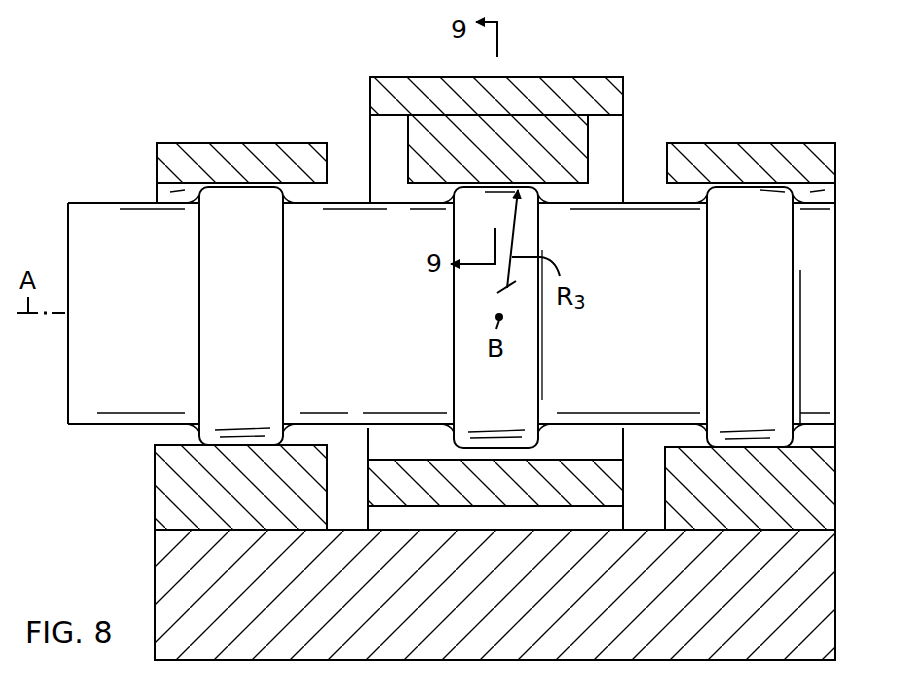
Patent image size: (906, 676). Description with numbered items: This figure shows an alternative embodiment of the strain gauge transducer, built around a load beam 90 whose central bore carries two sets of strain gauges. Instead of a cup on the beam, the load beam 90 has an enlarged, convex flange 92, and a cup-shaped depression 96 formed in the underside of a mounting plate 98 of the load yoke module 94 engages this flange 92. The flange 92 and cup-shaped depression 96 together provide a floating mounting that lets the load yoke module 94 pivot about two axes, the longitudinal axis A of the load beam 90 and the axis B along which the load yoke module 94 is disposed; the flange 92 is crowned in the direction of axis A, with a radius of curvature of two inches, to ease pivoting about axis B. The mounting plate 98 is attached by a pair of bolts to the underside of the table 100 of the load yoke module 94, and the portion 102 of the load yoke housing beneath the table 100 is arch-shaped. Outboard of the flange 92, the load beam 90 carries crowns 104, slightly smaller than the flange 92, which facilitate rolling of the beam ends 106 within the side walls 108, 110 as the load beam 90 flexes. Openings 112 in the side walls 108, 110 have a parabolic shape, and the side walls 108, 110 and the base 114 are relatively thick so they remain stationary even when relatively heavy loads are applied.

The load beam 90 is at (83, 211).
The flange 92 is at (465, 302).
The load yoke module 94 is at (602, 49).
The cup-shaped depression 96 is at (446, 189).
The mounting plate 98 is at (408, 133).
The table 100 is at (623, 95).
The portion of the load yoke housing 102 is at (607, 487).
The crowns 104 is at (260, 303).
The ends 106 is at (812, 279).
The side wall 108 is at (783, 148).
The side wall 110 is at (194, 143).
The openings 112 is at (165, 192).
The base 114 is at (180, 555).